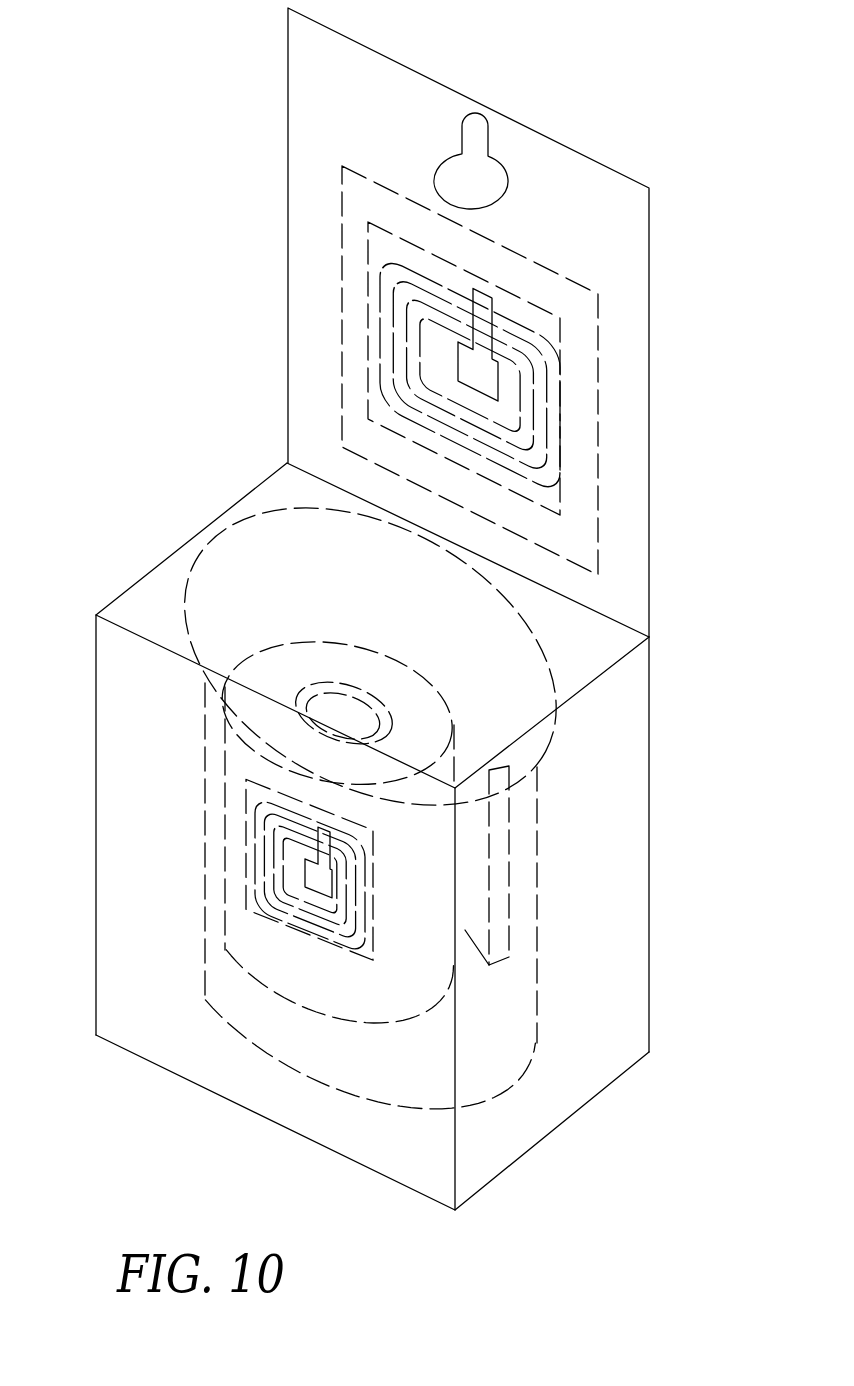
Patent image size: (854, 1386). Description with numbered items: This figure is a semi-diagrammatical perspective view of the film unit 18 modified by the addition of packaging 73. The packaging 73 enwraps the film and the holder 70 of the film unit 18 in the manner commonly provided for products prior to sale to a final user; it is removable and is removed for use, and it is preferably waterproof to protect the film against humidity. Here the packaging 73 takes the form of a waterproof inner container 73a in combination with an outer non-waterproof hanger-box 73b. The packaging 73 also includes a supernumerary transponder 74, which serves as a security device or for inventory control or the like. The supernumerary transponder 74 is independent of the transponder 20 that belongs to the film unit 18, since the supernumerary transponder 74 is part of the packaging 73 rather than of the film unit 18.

The film unit 18 is at (183, 513).
The transponder 20 is at (353, 957).
The holder 70 is at (506, 893).
The packaging 73 is at (431, 64).
The waterproof inner container 73a is at (516, 1073).
The outer non-waterproof hanger-box 73b is at (652, 767).
The supernumerary transponder 74 is at (585, 394).